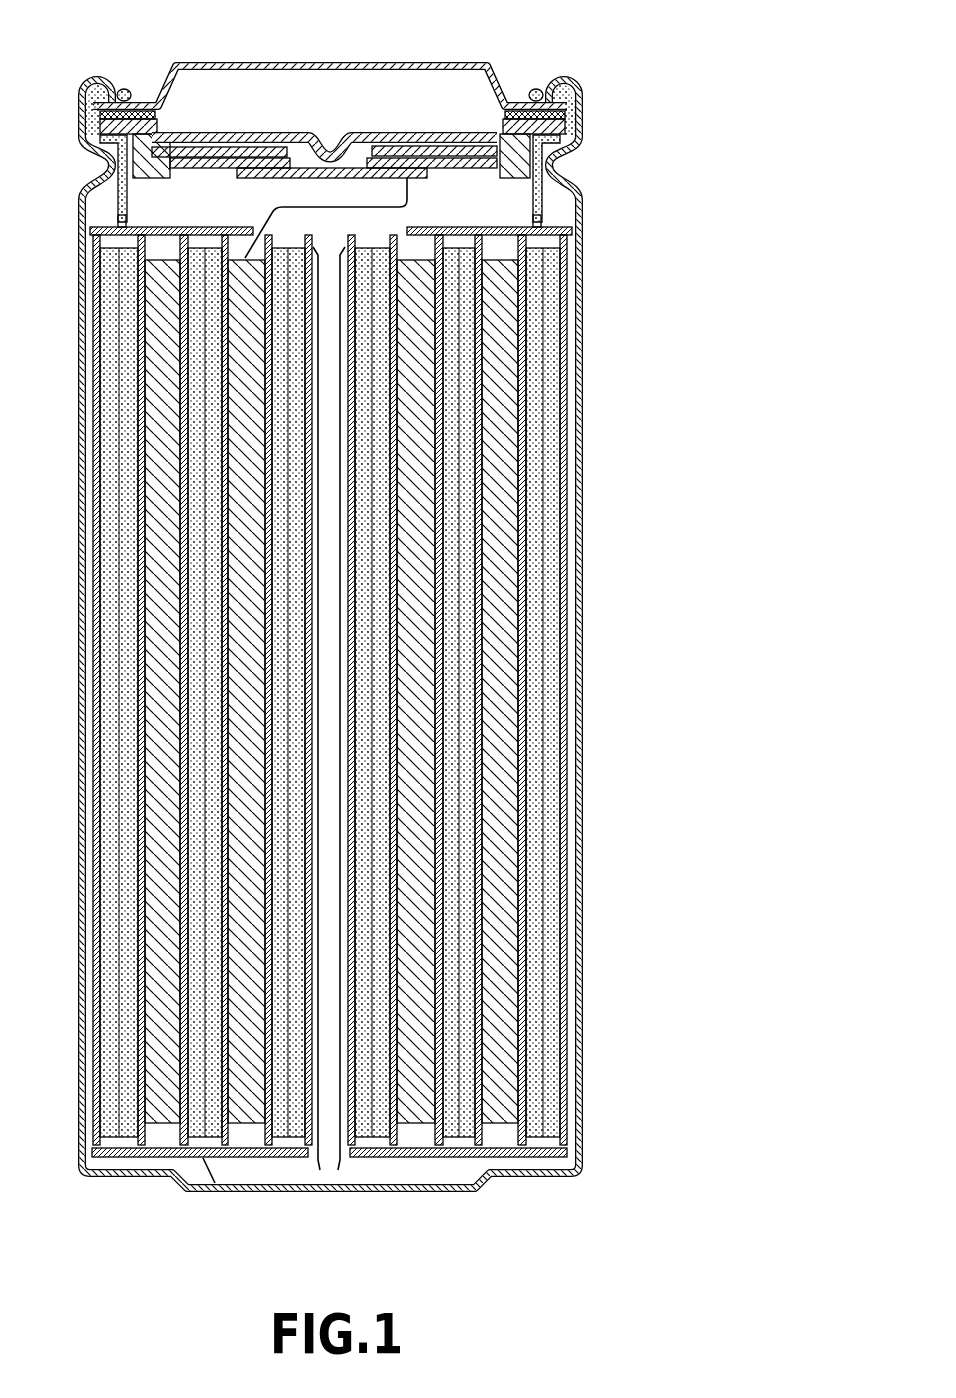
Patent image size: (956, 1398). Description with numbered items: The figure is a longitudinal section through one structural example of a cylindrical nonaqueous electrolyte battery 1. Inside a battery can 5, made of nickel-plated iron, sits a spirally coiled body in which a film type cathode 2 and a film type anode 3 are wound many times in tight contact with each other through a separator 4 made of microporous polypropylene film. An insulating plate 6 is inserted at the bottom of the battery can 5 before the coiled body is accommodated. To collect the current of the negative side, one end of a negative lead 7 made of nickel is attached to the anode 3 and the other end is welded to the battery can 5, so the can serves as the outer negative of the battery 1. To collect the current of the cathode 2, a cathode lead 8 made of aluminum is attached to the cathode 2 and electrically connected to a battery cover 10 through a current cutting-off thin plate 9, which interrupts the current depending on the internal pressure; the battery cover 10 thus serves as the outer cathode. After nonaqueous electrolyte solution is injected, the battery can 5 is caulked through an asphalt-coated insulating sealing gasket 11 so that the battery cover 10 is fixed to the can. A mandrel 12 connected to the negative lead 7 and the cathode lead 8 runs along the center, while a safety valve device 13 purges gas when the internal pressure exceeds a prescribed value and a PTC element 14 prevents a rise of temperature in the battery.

The nonaqueous electrolyte battery 1 is at (695, 54).
The cathode 2 is at (498, 311).
The anode 3 is at (545, 422).
The separator 4 is at (563, 523).
The battery can 5 is at (582, 632).
The insulating plate 6 is at (577, 1153).
The negative lead 7 is at (198, 1158).
The cathode lead 8 is at (410, 197).
The current cutting-off thin plate 9 is at (332, 160).
The battery cover 10 is at (395, 62).
The insulating sealing gasket 11 is at (101, 78).
The mandrel 12 is at (343, 1167).
The safety valve device 13 is at (262, 150).
The PTC element 14 is at (581, 108).